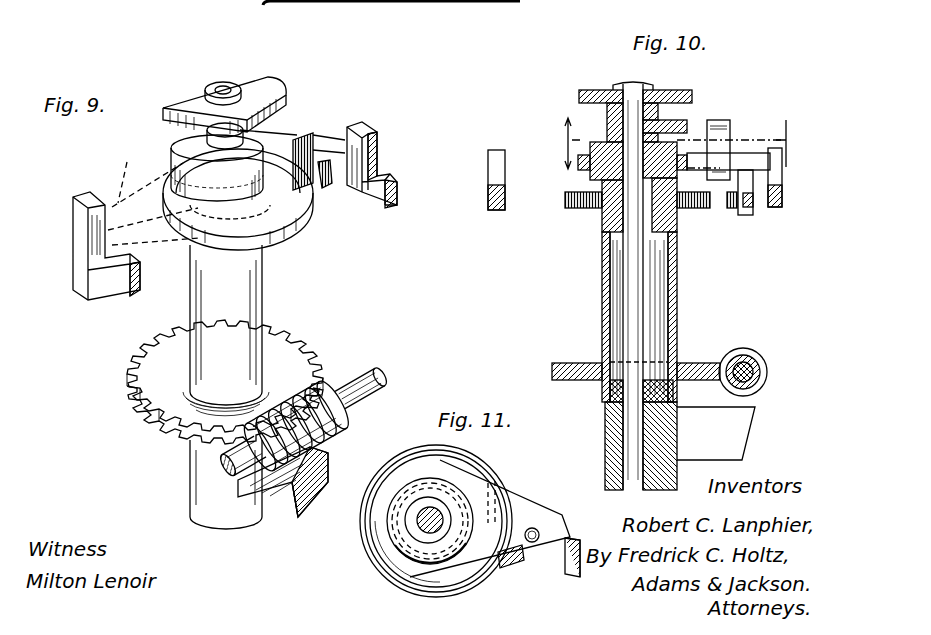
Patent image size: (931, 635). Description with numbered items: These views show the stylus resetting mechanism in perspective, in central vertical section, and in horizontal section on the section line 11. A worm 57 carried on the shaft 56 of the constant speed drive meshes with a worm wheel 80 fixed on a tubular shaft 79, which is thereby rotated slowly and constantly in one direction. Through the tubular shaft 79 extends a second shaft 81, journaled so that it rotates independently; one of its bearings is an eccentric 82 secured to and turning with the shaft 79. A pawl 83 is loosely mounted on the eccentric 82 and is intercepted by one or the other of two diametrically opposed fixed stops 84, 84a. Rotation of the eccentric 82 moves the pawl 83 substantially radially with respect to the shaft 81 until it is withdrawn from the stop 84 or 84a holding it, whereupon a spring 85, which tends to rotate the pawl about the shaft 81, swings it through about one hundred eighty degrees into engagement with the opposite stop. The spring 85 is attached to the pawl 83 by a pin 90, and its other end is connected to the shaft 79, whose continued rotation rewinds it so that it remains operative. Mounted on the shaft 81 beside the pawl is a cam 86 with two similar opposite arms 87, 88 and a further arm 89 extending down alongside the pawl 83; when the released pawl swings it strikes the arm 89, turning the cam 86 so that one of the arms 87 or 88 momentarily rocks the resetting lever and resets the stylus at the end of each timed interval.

In FIG. 10, the section line 11 is at (677, 143).
In FIG. 9, the shaft 56 is at (367, 370).
In FIG. 10, the shaft 56 is at (770, 363).
In FIG. 9, the worm 57 is at (330, 436).
In FIG. 10, the worm 57 is at (753, 350).
In FIG. 9, the shaft 79 is at (263, 292).
In FIG. 10, the shaft 79 is at (677, 298).
In FIG. 9, the worm wheel 80 is at (297, 333).
In FIG. 9, the shaft 81 is at (223, 88).
In FIG. 10, the shaft 81 is at (642, 277).
In FIG. 11, the shaft 81 is at (428, 520).
In FIG. 10, the eccentric 82 is at (590, 173).
In FIG. 11, the eccentric 82 is at (420, 530).
In FIG. 9, the pawl 83 is at (350, 127).
In FIG. 10, the pawl 83 is at (748, 156).
In FIG. 11, the pawl 83 is at (567, 537).
In FIG. 9, the stop 84 is at (378, 142).
In FIG. 10, the stop 84 is at (783, 183).
In FIG. 11, the stop 84 is at (565, 560).
In FIG. 9, the stop 84a is at (88, 182).
In FIG. 10, the stop 84a is at (513, 137).
In FIG. 9, the spring 85 is at (288, 237).
In FIG. 10, the spring 85 is at (683, 208).
In FIG. 11, the spring 85 is at (473, 590).
In FIG. 9, the cam 86 is at (240, 128).
In FIG. 10, the cam 86 is at (608, 117).
In FIG. 9, the arm 87 is at (163, 108).
In FIG. 10, the arm 87 is at (618, 102).
In FIG. 9, the arm 88 is at (273, 78).
In FIG. 10, the arm 88 is at (692, 93).
In FIG. 9, the arm 89 is at (307, 133).
In FIG. 10, the arm 89 is at (732, 115).
In FIG. 11, the arm 89 is at (520, 565).
In FIG. 9, the pin 90 is at (323, 197).
In FIG. 10, the pin 90 is at (741, 213).
In FIG. 11, the pin 90 is at (537, 532).